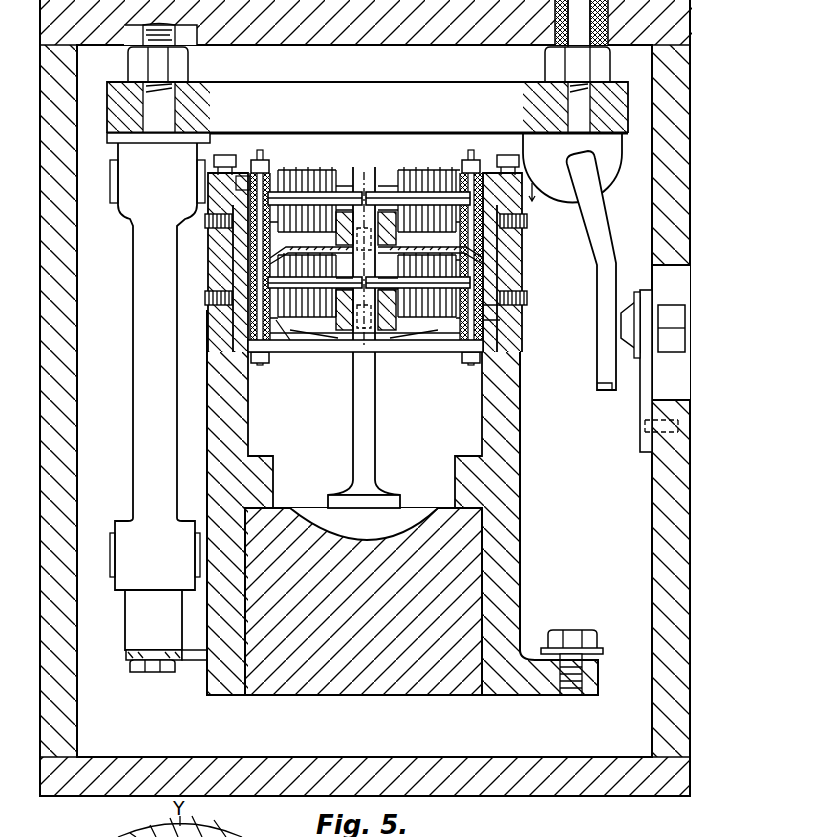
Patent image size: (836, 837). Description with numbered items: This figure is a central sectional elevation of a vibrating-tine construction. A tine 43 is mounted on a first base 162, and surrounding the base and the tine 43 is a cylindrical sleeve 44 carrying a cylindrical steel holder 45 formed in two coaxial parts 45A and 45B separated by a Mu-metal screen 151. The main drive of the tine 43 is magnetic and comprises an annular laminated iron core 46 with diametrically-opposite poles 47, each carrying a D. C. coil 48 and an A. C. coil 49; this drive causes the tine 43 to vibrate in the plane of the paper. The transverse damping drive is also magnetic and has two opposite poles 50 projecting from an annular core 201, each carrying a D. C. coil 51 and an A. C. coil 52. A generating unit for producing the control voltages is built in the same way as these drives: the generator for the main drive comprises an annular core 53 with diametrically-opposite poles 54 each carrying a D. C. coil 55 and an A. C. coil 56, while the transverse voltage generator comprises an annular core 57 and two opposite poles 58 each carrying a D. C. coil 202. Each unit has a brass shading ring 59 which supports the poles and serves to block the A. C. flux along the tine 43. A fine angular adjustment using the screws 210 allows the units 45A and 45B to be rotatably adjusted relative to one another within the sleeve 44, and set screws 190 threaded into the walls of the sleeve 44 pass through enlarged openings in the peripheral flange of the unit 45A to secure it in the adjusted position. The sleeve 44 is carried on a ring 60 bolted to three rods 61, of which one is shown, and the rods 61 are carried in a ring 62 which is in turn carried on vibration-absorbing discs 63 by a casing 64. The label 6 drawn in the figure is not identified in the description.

The ring 62 is at (206, 109).
The set screws 190 is at (373, 156).
The annular core 53 is at (264, 172).
The A. C. coil 56 is at (300, 176).
The D. C. coil 55 is at (318, 170).
The poles 54 is at (333, 193).
The poles 58 is at (366, 258).
The screws 210 is at (235, 182).
The lever 6 is at (210, 184).
The holder part 45A is at (240, 230).
The annular core 57 is at (252, 240).
The Mu-metal screen 151 is at (245, 260).
The annular laminated iron core 46 is at (222, 290).
The holder part 45B is at (240, 322).
The cylindrical steel holder 45 is at (492, 258).
The brass shading ring 59 is at (414, 354).
The D. C. coil 202 is at (367, 281).
The poles 47 is at (340, 356).
The poles 50 is at (364, 338).
The annular core 201 is at (500, 312).
The vibration-absorbing discs 63 is at (622, 264).
The A. C. coil 49 is at (296, 325).
The D. C. coil 48 is at (323, 320).
The D. C. coil 51 is at (384, 342).
The A. C. coil 52 is at (439, 282).
The tine 43 is at (372, 413).
The cylindrical sleeve 44 is at (512, 427).
The casing 64 is at (655, 486).
The rods 61 is at (140, 430).
The ring 60 is at (193, 660).
The first base 162 is at (296, 692).